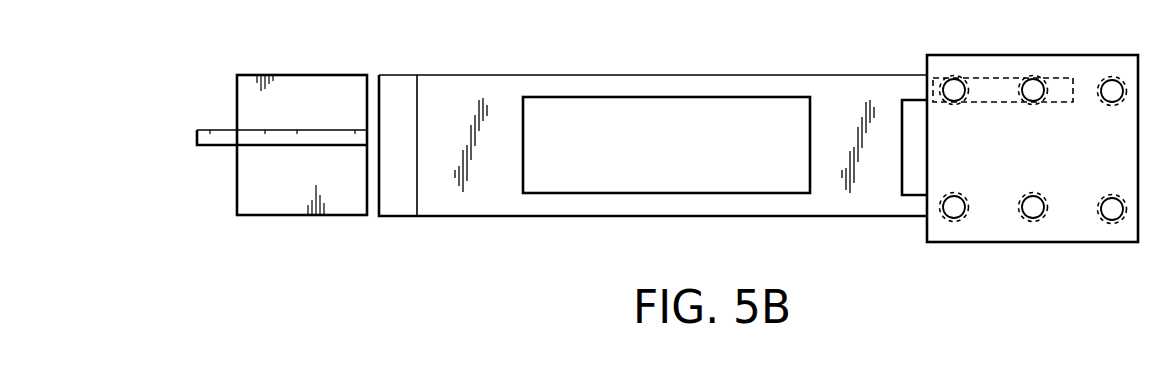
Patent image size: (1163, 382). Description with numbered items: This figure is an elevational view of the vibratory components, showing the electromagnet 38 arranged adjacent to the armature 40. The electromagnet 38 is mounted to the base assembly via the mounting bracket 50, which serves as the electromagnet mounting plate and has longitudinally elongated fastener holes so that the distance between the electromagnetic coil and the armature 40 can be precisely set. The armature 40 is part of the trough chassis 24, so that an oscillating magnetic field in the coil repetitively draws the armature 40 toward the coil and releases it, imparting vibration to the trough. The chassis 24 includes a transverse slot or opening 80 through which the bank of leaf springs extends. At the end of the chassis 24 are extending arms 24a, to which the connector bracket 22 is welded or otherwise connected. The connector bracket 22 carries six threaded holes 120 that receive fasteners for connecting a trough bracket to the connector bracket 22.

The connector bracket 22 is at (1036, 165).
The trough chassis 24 is at (608, 74).
The extending arm 24a is at (915, 88).
The electromagnet 38 is at (295, 75).
The armature 40 is at (396, 80).
The mounting bracket 50 is at (200, 129).
The opening 80 is at (528, 178).
The threaded hole 120 is at (1110, 88).